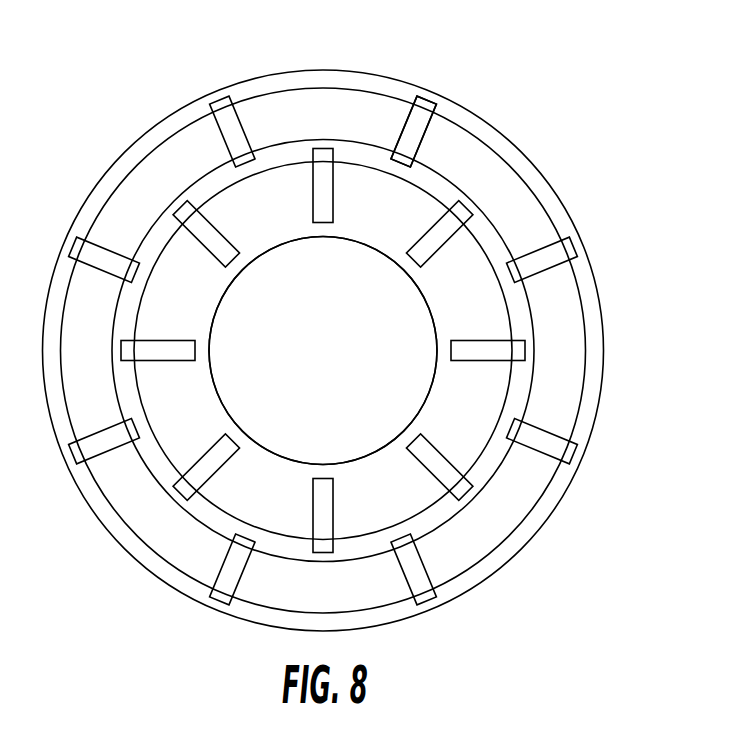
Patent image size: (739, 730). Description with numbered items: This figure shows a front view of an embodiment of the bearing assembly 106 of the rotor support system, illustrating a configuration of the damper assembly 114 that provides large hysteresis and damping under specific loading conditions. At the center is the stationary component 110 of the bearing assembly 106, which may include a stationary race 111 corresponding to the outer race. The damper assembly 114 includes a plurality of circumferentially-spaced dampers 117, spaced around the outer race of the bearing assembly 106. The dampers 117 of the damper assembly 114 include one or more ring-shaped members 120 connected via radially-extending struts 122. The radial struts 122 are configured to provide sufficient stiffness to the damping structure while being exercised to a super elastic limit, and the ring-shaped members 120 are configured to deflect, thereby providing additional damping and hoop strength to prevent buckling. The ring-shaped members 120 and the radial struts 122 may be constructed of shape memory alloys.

The bearing assembly 106 is at (565, 105).
The damper assembly 114 is at (558, 183).
The ring-shaped member 120 is at (490, 460).
The stationary component 110 is at (323, 351).
The stationary race 111 is at (362, 365).
The damper 117 is at (343, 152).
The radially-extending strut 122 is at (540, 427).